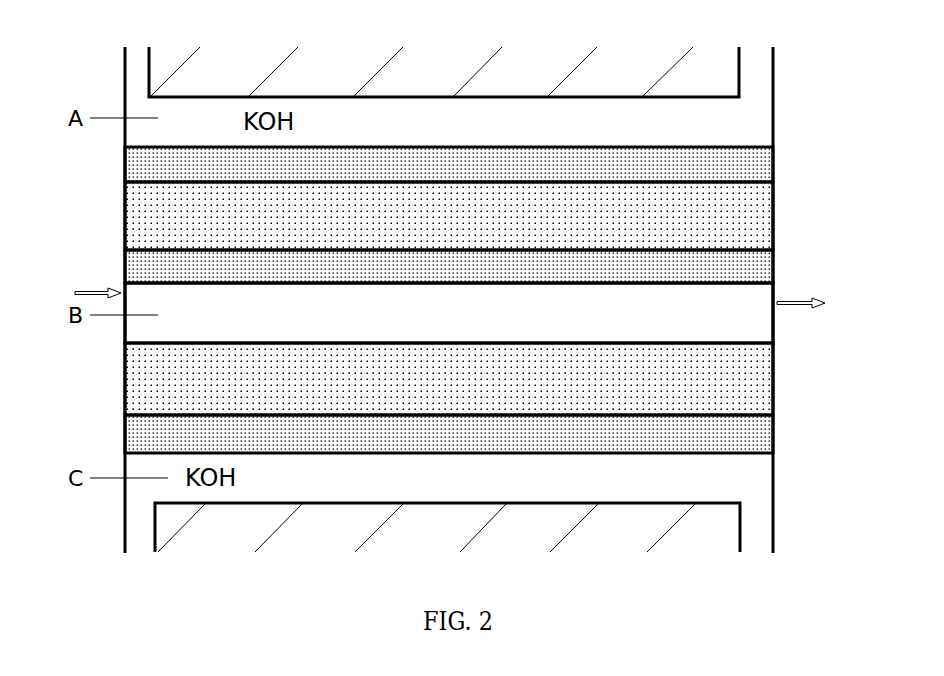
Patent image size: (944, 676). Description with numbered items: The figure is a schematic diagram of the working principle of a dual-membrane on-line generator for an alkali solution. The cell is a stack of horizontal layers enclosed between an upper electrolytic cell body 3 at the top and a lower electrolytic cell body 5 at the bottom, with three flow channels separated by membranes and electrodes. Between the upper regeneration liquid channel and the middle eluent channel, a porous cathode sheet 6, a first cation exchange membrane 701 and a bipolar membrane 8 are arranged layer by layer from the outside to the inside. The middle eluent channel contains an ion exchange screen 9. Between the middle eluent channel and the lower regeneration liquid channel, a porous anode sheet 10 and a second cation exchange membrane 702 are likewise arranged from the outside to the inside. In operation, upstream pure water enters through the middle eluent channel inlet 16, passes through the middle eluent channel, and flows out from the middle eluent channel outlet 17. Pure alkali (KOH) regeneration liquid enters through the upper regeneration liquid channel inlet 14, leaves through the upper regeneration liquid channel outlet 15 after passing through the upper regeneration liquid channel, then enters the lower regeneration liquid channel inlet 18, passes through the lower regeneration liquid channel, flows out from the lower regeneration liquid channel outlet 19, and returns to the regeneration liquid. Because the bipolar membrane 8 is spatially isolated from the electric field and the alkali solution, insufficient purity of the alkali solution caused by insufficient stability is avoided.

The upper electrolytic cell body 3 is at (493, 56).
The lower electrolytic cell body 5 is at (675, 528).
The porous cathode sheet 6 is at (773, 158).
The first cation exchange membrane 701 is at (773, 203).
The bipolar membrane 8 is at (773, 253).
The ion exchange screen 9 is at (765, 329).
The second cation exchange membrane 702 is at (763, 393).
The porous anode sheet 10 is at (773, 447).
The upper regeneration liquid channel inlet 14 is at (763, 72).
The upper regeneration liquid channel outlet 15 is at (125, 72).
The middle eluent channel inlet 16 is at (91, 281).
The middle eluent channel outlet 17 is at (819, 304).
The lower regeneration liquid channel inlet 18 is at (760, 517).
The lower regeneration liquid channel outlet 19 is at (133, 522).